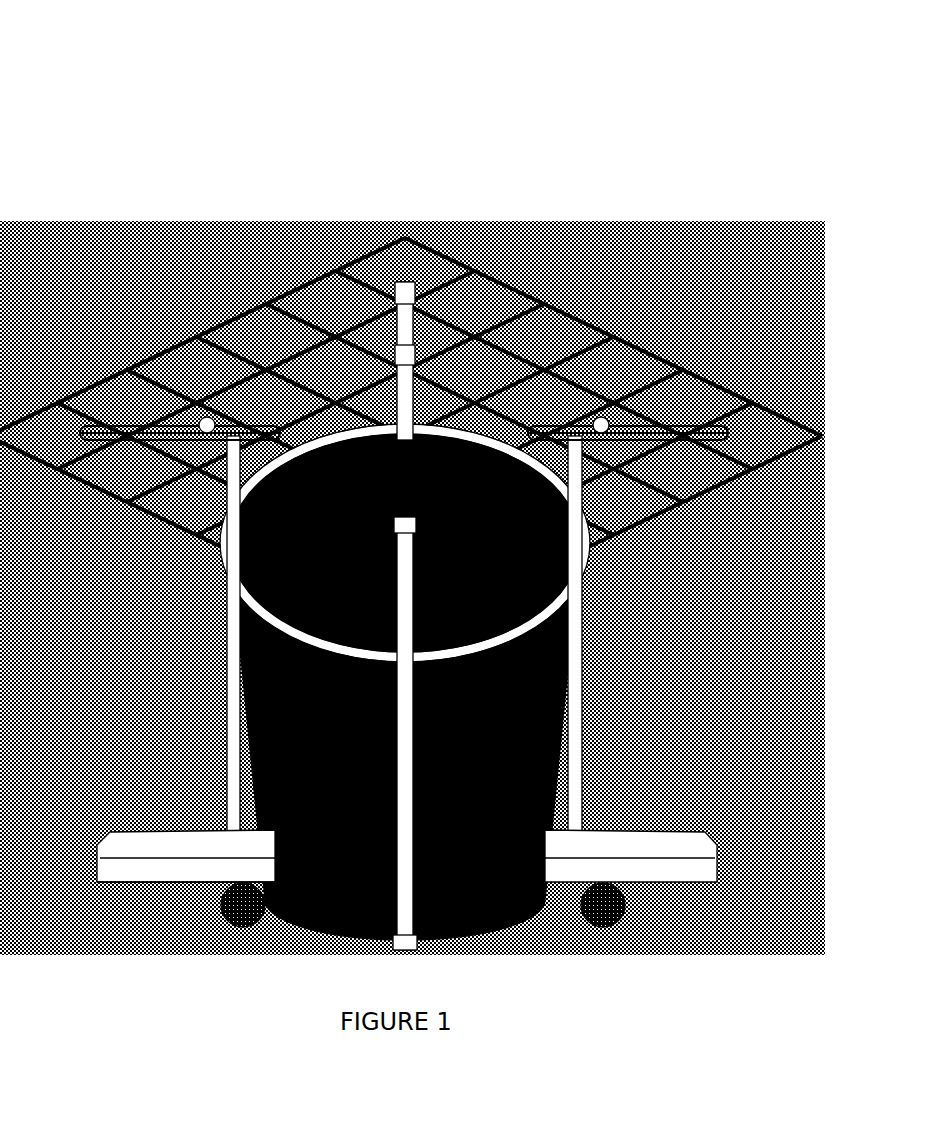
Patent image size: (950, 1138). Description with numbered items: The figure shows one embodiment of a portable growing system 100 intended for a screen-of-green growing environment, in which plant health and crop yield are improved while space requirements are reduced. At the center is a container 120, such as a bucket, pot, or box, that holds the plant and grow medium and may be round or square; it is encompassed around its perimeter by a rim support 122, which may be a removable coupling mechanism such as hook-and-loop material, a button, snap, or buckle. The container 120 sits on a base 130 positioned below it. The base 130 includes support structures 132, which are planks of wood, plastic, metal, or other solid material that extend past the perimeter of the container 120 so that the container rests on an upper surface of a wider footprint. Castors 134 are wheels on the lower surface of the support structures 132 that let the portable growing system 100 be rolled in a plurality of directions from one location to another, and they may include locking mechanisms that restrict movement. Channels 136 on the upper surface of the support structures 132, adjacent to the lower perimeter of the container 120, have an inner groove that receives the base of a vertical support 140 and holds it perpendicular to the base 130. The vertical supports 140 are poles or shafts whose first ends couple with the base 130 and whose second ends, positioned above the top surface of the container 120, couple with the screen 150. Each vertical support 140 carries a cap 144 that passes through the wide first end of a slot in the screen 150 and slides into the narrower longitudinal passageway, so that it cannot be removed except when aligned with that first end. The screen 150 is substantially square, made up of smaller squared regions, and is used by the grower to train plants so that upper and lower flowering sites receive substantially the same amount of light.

The portable growing system 100 is at (165, 106).
The container 120 is at (553, 755).
The rim support 122 is at (565, 612).
The base 130 is at (553, 865).
The support structures 132 is at (103, 919).
The castors 134 is at (240, 930).
The channels 136 is at (617, 882).
The vertical supports 140 is at (212, 672).
The cap 144 is at (600, 420).
The screen 150 is at (207, 333).